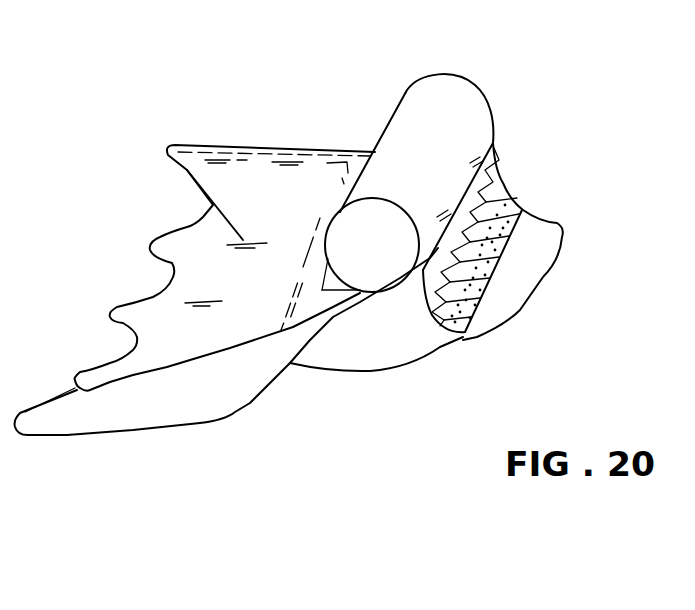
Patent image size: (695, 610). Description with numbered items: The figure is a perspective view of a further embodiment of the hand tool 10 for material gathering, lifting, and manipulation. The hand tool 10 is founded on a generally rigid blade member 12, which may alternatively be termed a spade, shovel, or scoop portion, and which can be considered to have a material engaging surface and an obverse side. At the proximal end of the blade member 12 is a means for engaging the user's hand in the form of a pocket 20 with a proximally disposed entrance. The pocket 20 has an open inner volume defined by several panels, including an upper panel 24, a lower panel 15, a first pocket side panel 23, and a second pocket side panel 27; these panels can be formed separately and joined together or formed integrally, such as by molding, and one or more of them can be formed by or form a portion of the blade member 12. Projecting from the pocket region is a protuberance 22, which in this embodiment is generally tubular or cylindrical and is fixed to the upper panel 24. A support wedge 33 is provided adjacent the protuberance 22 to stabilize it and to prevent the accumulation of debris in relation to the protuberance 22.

The hand tool 10 is at (288, 85).
The blade member 12 is at (213, 207).
The lower panel 15 is at (525, 262).
The pocket 20 is at (482, 210).
The protuberance 22 is at (432, 95).
The first pocket side panel 23 is at (390, 337).
The upper panel 24 is at (313, 312).
The second pocket side panel 27 is at (490, 193).
The support wedge 33 is at (340, 287).